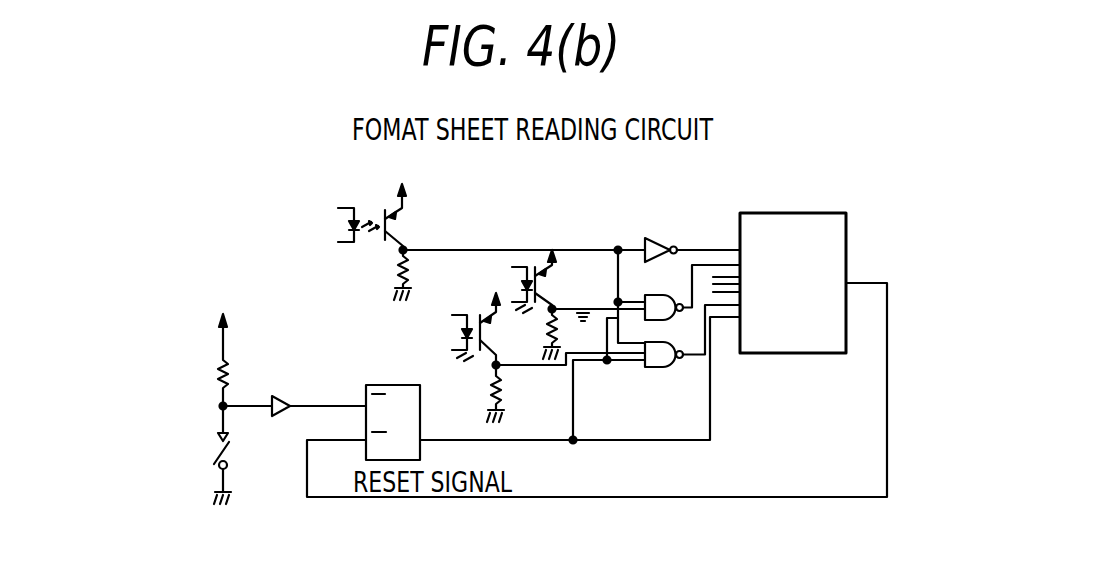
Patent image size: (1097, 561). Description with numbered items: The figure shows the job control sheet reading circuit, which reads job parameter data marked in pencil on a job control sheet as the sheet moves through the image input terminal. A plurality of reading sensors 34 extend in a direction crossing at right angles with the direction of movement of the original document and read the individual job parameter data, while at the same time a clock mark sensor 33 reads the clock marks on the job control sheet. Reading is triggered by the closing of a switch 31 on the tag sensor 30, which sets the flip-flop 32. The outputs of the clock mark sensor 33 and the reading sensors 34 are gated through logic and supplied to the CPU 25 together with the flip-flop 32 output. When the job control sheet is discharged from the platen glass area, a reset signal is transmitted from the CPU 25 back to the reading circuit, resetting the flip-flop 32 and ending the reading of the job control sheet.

The CPU 25 is at (847, 228).
The tag sensor 30 is at (244, 386).
The switch 31 is at (233, 455).
The flip-flop 32 is at (422, 393).
The clock mark sensor 33 is at (373, 202).
The reading sensors 34 is at (470, 292).